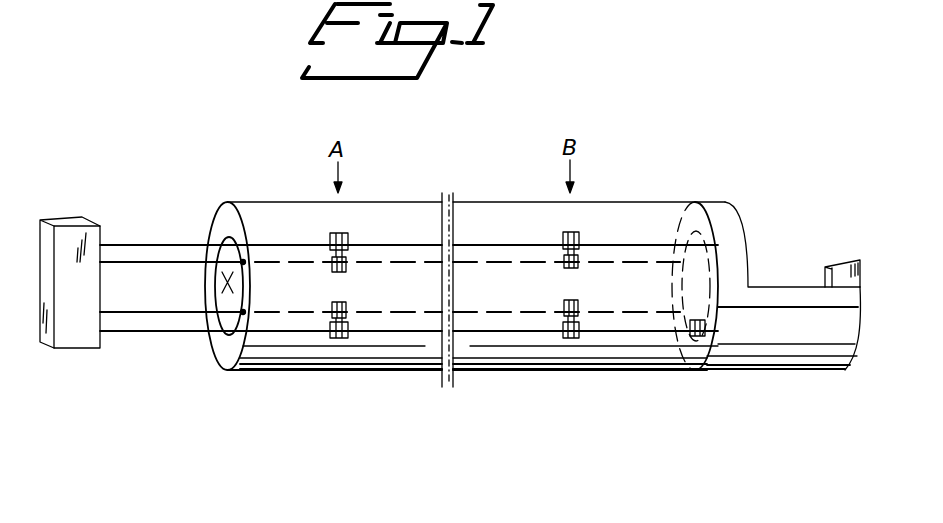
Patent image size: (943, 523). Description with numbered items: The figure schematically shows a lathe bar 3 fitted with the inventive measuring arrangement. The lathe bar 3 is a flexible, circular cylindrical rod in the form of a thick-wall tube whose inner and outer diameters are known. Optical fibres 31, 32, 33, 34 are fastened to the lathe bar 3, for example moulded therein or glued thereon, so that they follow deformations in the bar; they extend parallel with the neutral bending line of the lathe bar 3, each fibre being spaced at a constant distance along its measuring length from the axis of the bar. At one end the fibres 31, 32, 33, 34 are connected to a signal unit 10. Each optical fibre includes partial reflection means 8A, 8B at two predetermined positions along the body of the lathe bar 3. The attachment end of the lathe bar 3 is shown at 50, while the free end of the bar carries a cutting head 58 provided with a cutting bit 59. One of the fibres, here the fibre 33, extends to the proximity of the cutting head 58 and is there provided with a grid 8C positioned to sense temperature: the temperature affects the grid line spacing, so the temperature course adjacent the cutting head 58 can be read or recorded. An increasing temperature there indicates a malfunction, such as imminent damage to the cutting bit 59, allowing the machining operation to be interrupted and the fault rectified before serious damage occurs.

The signal unit 10 is at (90, 299).
The optical fibre 31 is at (147, 245).
The optical fibre 32 is at (183, 260).
The optical fibre 33 is at (130, 333).
The optical fibre 34 is at (172, 315).
The attachment end 50 is at (268, 380).
The lathe bar 3 is at (408, 372).
The partial reflection means 8A is at (340, 338).
The partial reflection means 8B is at (571, 338).
The grid 8C is at (697, 336).
The cutting head 58 is at (722, 210).
The cutting bit 59 is at (835, 263).